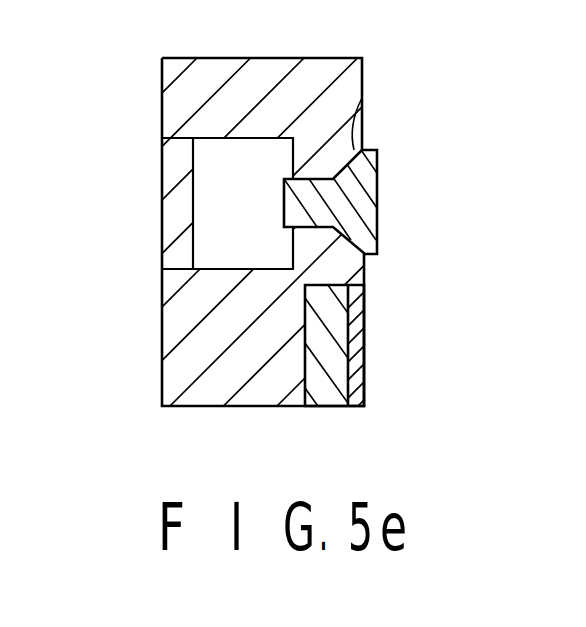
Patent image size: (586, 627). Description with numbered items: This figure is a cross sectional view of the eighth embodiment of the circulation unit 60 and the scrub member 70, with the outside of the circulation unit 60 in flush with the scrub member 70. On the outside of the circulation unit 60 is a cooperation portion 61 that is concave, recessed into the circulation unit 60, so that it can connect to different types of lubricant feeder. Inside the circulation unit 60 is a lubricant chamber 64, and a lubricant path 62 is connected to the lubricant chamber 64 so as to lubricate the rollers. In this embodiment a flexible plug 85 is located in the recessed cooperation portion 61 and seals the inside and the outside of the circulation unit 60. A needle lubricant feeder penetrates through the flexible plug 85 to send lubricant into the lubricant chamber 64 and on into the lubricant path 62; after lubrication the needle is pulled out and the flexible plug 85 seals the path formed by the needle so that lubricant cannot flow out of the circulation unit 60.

The circulation unit 60 is at (161, 119).
The cooperation portion 61 is at (351, 116).
The lubricant path 62 is at (182, 192).
The lubricant chamber 64 is at (218, 250).
The flexible plug 85 is at (377, 202).
The scrub member 70 is at (365, 333).